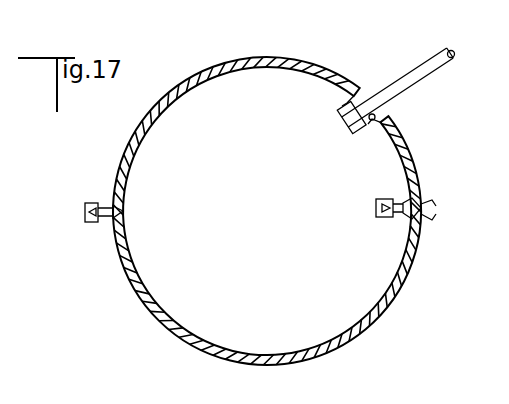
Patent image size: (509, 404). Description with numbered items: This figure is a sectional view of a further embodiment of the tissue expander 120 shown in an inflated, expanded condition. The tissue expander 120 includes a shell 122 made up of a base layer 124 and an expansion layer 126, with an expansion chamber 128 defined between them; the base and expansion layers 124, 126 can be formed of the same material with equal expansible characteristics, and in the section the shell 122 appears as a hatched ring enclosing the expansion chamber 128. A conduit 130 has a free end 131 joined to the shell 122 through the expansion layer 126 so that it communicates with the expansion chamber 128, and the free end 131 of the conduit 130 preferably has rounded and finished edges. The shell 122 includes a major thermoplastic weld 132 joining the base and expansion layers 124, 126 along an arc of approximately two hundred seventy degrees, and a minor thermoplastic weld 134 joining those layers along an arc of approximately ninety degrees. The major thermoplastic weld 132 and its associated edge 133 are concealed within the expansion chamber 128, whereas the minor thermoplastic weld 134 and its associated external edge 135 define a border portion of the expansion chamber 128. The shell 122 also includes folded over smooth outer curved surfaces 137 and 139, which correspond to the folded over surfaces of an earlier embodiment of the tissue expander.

The tissue expander 120 is at (294, 57).
The shell 122 is at (214, 64).
The base layer 124 is at (396, 302).
The expansion layer 126 is at (346, 86).
The expansion chamber 128 is at (243, 173).
The conduit 130 is at (425, 60).
The free end 131 is at (375, 120).
The major thermoplastic weld 132 is at (395, 200).
The edge 133 is at (376, 212).
The minor thermoplastic weld 134 is at (103, 200).
The external edge 135 is at (95, 214).
The folded over smooth outer curved surface 137 is at (428, 205).
The folded over smooth outer curved surface 139 is at (433, 214).